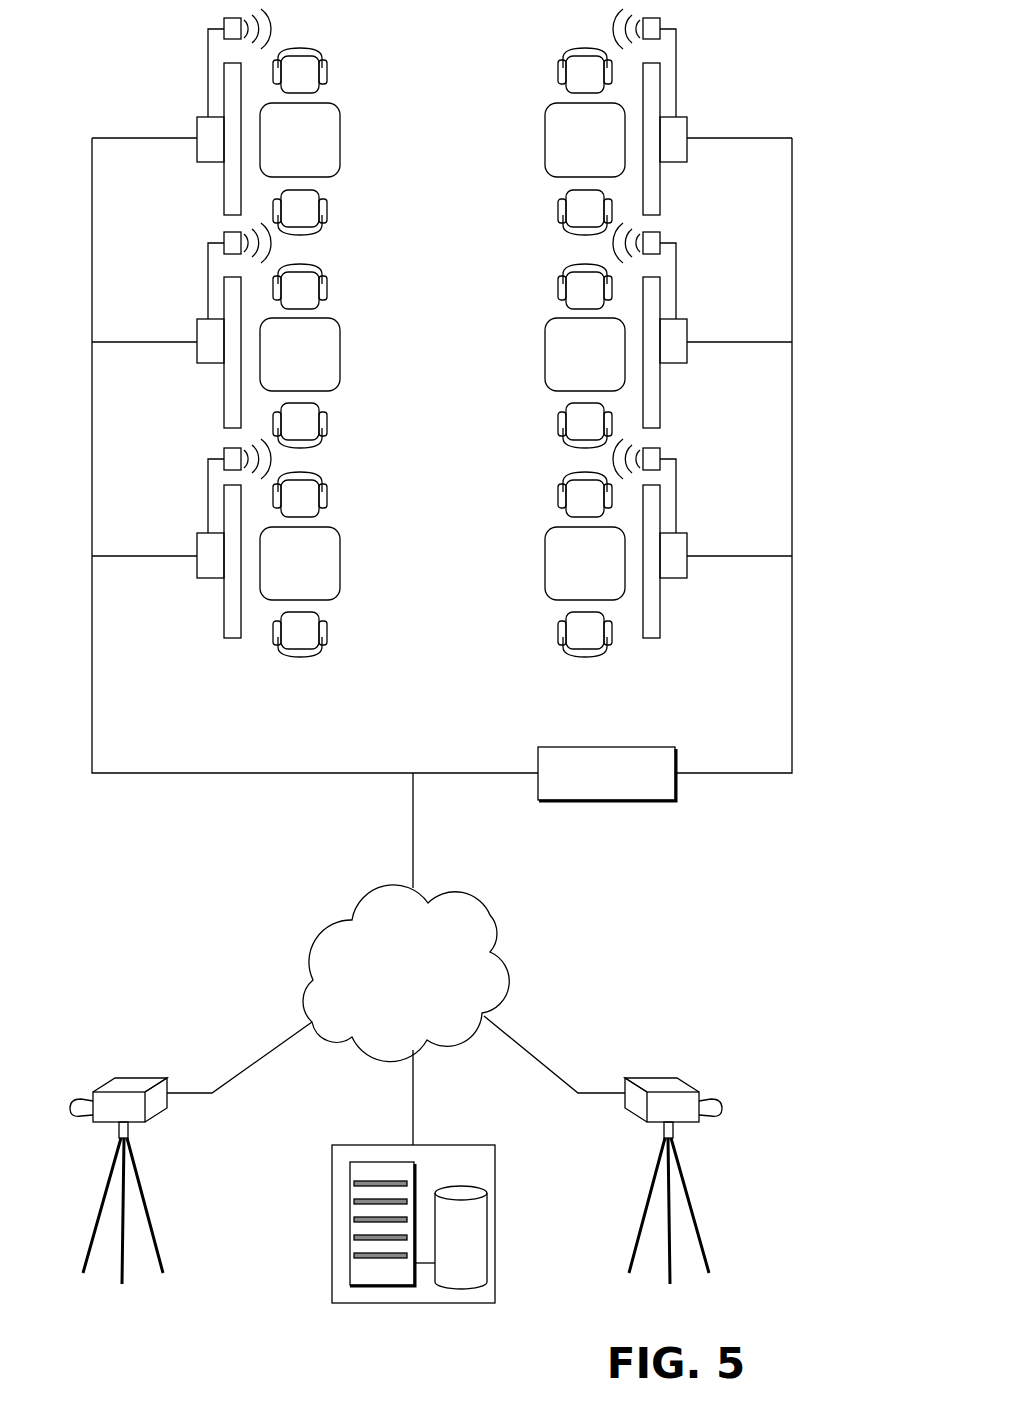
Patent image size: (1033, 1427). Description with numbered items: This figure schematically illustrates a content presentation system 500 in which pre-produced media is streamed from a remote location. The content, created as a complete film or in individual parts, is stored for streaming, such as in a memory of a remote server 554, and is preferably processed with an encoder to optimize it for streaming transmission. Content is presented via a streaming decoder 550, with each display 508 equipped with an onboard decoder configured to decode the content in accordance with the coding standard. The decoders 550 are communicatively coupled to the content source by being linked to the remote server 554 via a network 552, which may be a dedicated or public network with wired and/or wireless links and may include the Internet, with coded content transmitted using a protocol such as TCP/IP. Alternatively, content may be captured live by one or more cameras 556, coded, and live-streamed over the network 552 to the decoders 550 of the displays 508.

The content presentation system 500 is at (777, 828).
The display 508 is at (224, 196).
The streaming decoder 550 is at (197, 125).
The network 552 is at (491, 913).
The remote server 554 is at (496, 1193).
The camera 556 is at (172, 1131).